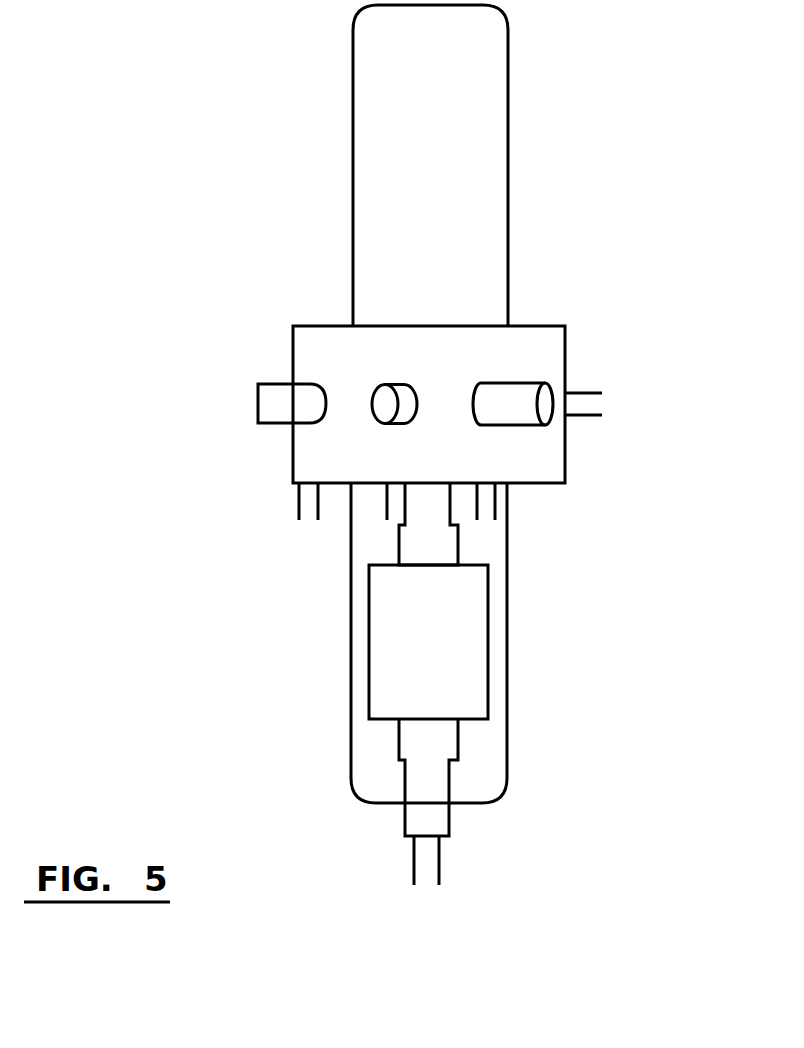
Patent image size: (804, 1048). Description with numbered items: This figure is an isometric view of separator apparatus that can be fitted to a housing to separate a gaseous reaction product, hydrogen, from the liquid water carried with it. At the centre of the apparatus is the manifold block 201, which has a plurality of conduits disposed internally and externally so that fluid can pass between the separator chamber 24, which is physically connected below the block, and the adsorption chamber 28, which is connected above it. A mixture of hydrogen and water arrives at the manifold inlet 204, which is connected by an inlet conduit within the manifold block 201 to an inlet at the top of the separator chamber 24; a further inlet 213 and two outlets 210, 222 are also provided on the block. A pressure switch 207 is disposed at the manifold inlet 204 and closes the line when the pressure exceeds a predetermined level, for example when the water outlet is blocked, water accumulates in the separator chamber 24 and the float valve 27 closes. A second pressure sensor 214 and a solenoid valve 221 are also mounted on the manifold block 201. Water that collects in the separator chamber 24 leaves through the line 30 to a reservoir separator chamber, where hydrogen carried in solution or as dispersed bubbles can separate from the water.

The adsorption chamber 28 is at (508, 122).
The manifold block 201 is at (532, 325).
The solenoid valve 221 is at (283, 405).
The pressure sensor 214 is at (393, 384).
The pressure switch 207 is at (508, 402).
The outlet 210 is at (585, 408).
The outlet 222 is at (307, 500).
The manifold inlet 204 is at (488, 503).
The inlet 213 is at (397, 501).
The float valve 27 is at (447, 650).
The separator chamber 24 is at (507, 750).
The line 30 is at (431, 865).